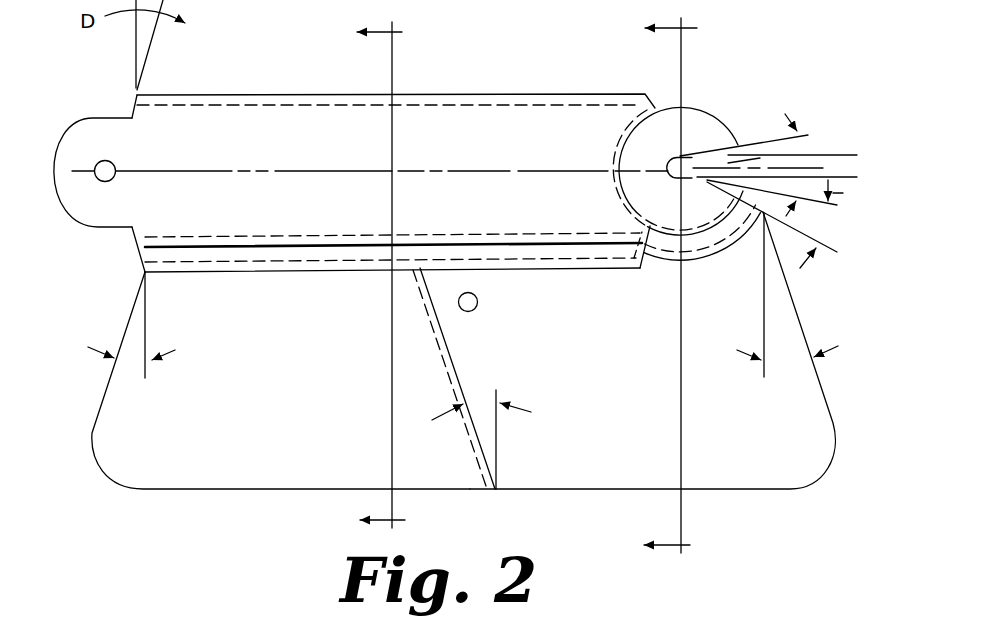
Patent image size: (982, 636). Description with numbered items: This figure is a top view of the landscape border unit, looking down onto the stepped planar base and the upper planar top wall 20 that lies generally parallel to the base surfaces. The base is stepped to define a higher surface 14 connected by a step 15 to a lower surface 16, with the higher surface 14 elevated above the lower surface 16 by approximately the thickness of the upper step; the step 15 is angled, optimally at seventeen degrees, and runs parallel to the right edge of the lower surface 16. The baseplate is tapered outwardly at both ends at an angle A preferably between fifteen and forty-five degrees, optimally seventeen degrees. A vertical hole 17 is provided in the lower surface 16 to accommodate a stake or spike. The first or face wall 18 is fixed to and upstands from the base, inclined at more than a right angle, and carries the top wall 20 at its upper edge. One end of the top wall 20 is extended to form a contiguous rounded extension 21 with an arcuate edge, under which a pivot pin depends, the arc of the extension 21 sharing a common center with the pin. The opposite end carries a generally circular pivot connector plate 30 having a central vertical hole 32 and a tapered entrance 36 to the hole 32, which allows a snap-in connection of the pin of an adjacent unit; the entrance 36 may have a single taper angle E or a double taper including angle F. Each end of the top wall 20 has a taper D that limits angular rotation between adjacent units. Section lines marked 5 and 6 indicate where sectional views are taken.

The section line 5- 5 is at (389, 277).
The section line 6- 6 is at (678, 286).
The higher surface 14 is at (304, 392).
The step 15 is at (455, 367).
The lower surface 16 is at (604, 381).
The vertical hole 17 is at (478, 303).
The first wall 18 is at (140, 258).
The top wall 20 is at (454, 152).
The rounded extension 21 is at (78, 128).
The pivot connector plate 30 is at (712, 113).
The central vertical hole 32 is at (668, 163).
The tapered entrance 36 is at (778, 153).